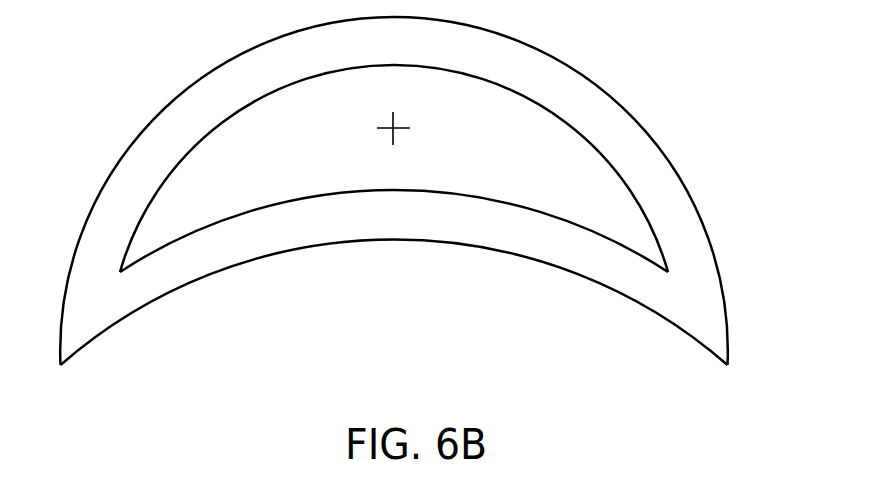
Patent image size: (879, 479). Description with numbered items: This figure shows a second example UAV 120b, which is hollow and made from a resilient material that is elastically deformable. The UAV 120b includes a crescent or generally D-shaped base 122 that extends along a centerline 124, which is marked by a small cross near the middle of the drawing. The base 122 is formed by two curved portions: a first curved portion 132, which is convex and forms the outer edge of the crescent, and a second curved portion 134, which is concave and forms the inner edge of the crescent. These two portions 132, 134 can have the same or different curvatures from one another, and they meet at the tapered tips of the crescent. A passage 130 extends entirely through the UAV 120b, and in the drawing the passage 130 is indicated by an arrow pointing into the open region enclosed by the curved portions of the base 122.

The UAV 120b is at (407, 191).
The base 122 is at (403, 191).
The centerline 124 is at (386, 131).
The passage 130 is at (470, 122).
The first curved portion 132 is at (687, 190).
The second curved portion 134 is at (566, 269).